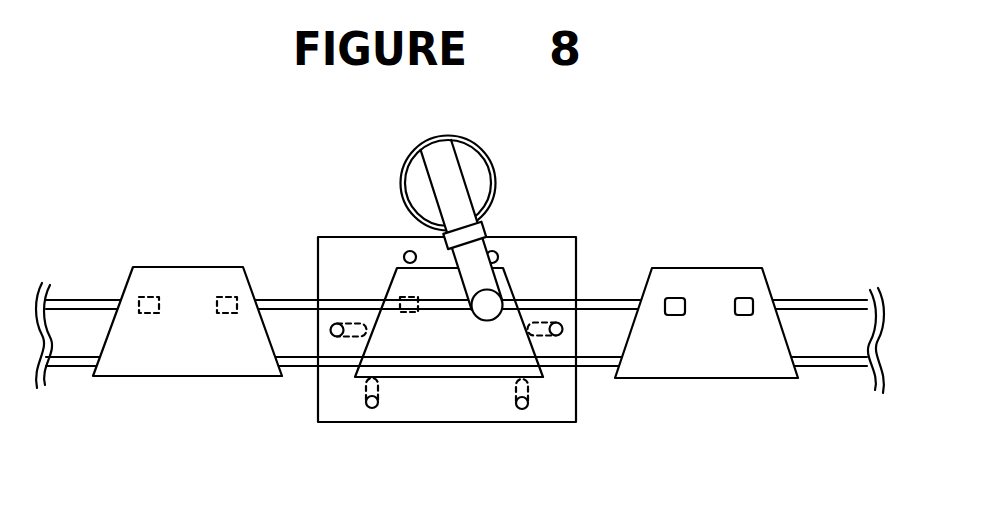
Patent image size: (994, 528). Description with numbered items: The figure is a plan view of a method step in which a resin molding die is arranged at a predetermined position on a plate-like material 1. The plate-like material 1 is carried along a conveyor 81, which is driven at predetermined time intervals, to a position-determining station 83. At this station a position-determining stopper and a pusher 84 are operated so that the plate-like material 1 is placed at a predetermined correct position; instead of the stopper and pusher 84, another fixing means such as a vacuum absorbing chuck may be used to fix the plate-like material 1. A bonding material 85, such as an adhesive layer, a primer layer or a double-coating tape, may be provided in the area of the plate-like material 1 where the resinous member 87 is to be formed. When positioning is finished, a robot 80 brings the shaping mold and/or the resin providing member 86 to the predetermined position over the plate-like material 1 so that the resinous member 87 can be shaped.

The plate-like material 1 is at (187, 316).
The robot 80 is at (463, 157).
The conveyor 81 is at (85, 298).
The position-determining station 83 is at (345, 412).
The pusher 84 is at (517, 408).
The bonding material 85 is at (222, 297).
The resin providing member 86 is at (488, 308).
The resinous member 87 is at (743, 302).